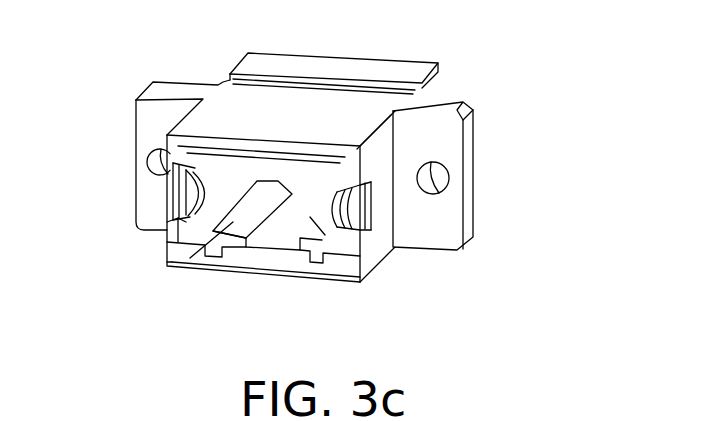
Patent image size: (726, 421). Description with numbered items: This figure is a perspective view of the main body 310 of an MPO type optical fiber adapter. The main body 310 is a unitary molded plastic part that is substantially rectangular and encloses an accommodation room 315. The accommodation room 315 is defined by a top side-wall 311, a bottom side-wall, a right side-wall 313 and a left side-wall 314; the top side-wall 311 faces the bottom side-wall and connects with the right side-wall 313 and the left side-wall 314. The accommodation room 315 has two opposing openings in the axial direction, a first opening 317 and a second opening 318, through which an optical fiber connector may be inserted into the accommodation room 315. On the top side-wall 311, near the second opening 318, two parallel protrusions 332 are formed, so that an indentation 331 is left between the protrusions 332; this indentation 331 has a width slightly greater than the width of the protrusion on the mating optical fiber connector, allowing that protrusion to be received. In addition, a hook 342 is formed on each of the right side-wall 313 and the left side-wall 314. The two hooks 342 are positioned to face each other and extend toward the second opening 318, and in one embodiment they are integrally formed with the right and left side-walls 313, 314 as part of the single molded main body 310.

The main body 310 is at (503, 75).
The top side-wall 311 is at (290, 272).
The right side-wall 313 is at (355, 257).
The left side-wall 314 is at (175, 256).
The accommodation room 315 is at (182, 263).
The first opening 317 is at (325, 173).
The second opening 318 is at (267, 238).
The indentation 331 is at (290, 237).
The protrusions 332 is at (240, 225).
The hook 342 is at (180, 198).